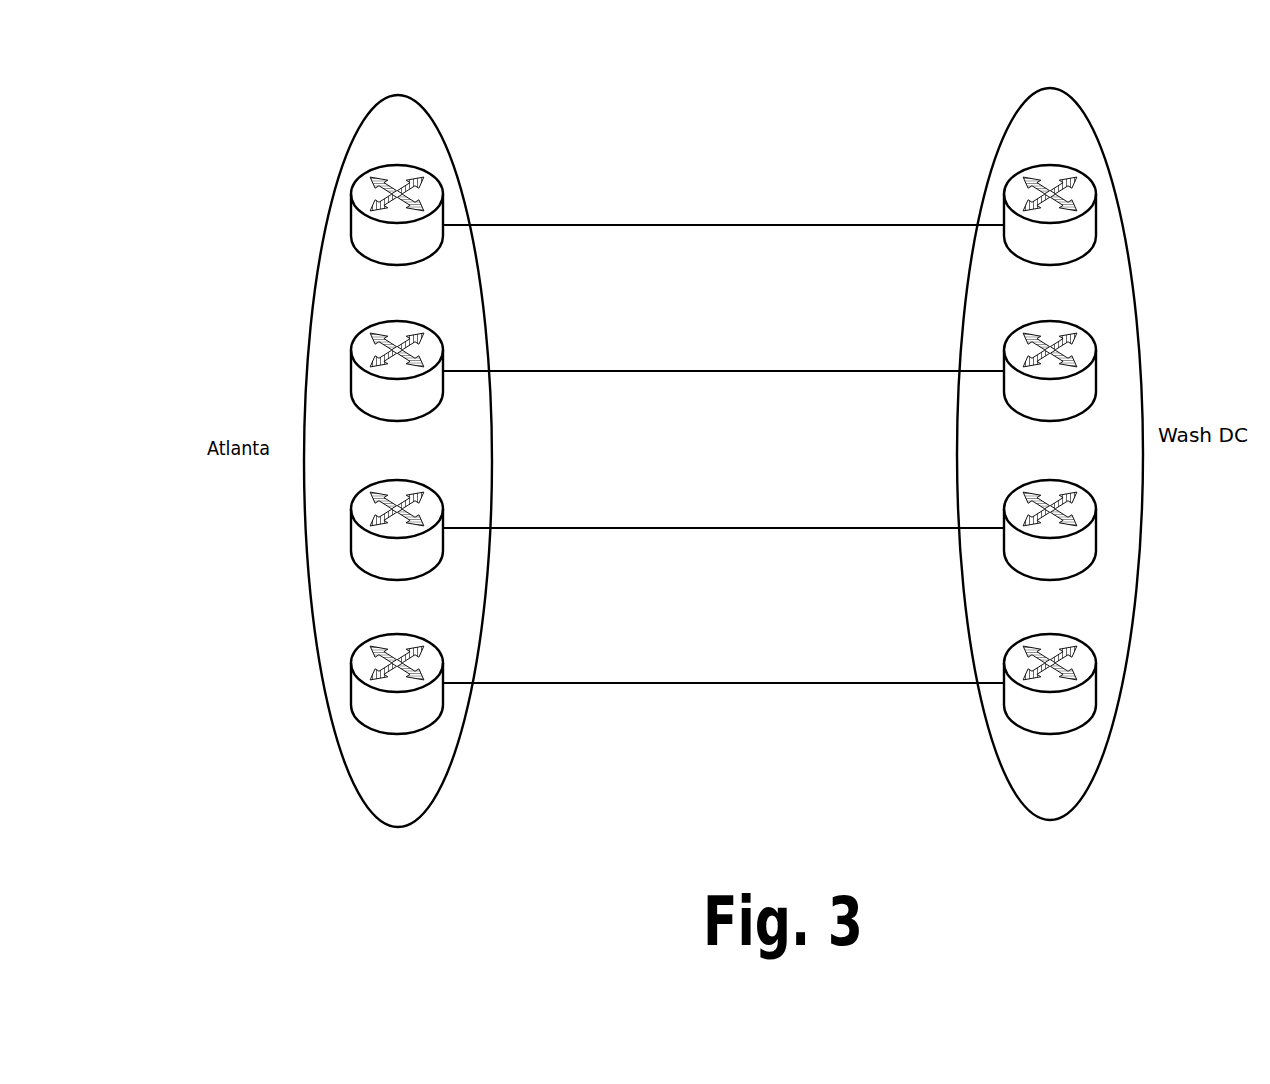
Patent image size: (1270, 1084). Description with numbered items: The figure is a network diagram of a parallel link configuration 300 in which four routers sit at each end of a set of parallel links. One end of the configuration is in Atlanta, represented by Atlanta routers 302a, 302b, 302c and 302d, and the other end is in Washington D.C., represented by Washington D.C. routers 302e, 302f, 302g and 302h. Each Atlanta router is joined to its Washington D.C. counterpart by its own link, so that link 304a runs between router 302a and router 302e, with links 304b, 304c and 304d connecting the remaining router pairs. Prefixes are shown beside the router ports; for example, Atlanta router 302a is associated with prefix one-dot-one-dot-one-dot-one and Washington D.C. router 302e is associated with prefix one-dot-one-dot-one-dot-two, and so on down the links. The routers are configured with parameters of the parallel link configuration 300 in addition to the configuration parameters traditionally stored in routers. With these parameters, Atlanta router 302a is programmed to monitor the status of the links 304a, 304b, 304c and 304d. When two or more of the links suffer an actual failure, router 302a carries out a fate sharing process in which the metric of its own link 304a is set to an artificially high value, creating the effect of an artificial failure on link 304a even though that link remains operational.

The parallel link configuration 300 is at (170, 84).
The Atlanta router 302a is at (356, 198).
The router 302b is at (360, 340).
The router 302c is at (352, 520).
The router 302d is at (352, 678).
The Washington D.C. router 302e is at (1097, 195).
The router 302f is at (1097, 345).
The router 302g is at (1097, 545).
The router 302h is at (1097, 703).
The link 304a is at (703, 225).
The link 304b is at (675, 371).
The link 304c is at (670, 528).
The link 304d is at (665, 683).